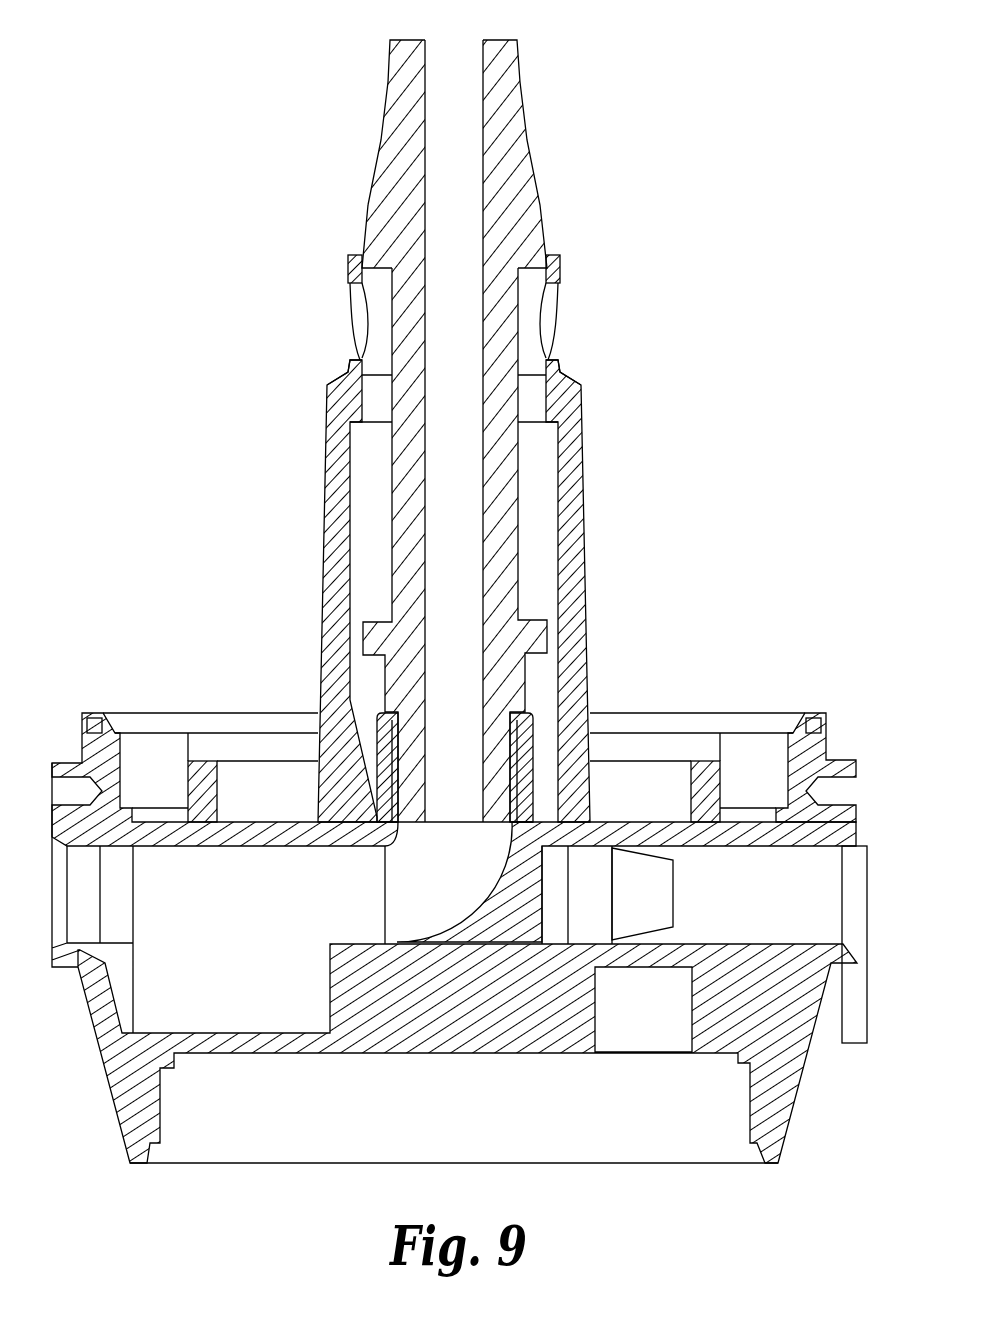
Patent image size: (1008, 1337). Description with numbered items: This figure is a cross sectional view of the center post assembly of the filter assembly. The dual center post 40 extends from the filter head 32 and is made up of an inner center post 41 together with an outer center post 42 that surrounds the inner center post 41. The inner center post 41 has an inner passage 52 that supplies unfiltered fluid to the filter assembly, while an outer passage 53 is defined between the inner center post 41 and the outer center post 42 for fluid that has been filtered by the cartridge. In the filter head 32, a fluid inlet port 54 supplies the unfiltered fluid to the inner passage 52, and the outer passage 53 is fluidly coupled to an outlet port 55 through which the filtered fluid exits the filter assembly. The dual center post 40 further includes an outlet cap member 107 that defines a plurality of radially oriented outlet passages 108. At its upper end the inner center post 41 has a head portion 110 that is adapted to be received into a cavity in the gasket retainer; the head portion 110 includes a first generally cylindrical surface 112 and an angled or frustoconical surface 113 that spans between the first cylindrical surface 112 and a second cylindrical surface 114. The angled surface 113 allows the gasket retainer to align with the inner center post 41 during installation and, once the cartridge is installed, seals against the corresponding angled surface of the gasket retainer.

The filter head 32 is at (803, 730).
The dual center post 40 is at (580, 142).
The inner center post 41 is at (508, 680).
The outer center post 42 is at (578, 470).
The inner passage 52 is at (480, 582).
The outer passage 53 is at (556, 533).
The fluid inlet port 54 is at (192, 908).
The outlet port 55 is at (823, 893).
The outlet cap member 107 is at (583, 378).
The radially oriented outlet passages 108 is at (348, 322).
The head portion 110 is at (500, 82).
The first generally cylindrical surface 112 is at (388, 74).
The angled or frustoconical surface 113 is at (378, 165).
The second cylindrical surface 114 is at (360, 248).